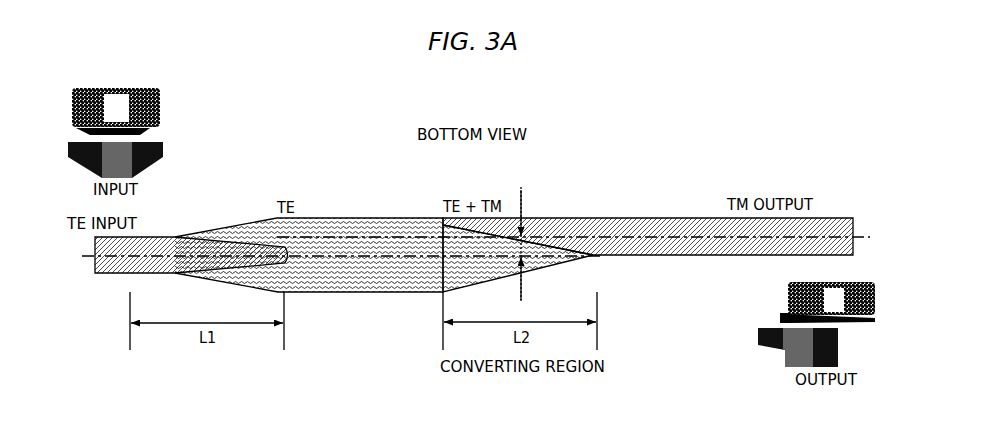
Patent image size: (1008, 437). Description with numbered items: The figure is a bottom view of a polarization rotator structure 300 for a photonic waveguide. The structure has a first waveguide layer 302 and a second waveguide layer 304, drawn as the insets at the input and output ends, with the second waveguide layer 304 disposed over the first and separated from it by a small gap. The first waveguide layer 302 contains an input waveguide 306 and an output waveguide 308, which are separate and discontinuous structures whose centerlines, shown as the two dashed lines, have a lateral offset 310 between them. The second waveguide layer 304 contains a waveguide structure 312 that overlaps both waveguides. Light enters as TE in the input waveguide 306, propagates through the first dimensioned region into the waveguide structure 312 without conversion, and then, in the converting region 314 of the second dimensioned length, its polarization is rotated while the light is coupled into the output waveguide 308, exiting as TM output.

The polarization rotator structure 300 is at (623, 172).
The first waveguide layer 302 is at (172, 153).
The second waveguide layer 304 is at (172, 112).
The input waveguide 306 is at (118, 275).
The output waveguide 308 is at (662, 217).
The lateral offset 310 is at (522, 210).
The waveguide structure 312 is at (370, 292).
The converting region 314 is at (494, 281).